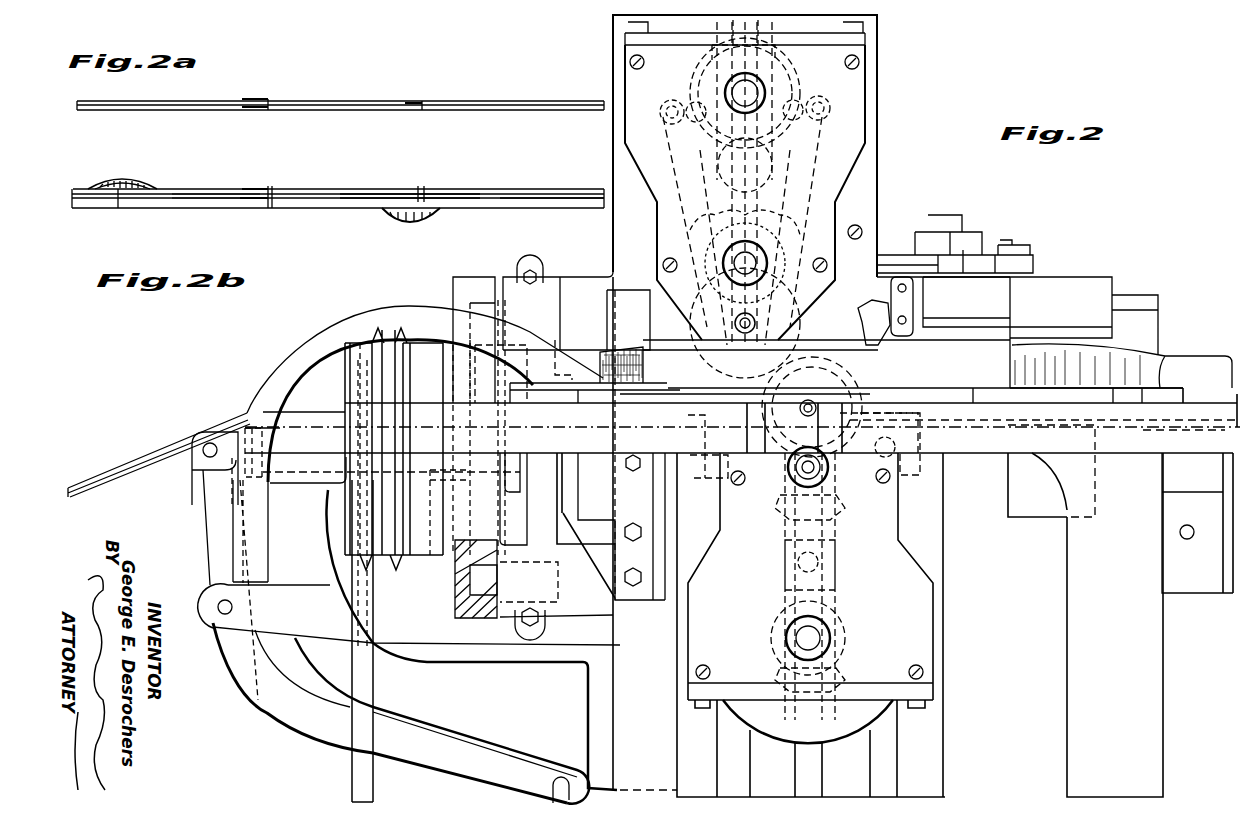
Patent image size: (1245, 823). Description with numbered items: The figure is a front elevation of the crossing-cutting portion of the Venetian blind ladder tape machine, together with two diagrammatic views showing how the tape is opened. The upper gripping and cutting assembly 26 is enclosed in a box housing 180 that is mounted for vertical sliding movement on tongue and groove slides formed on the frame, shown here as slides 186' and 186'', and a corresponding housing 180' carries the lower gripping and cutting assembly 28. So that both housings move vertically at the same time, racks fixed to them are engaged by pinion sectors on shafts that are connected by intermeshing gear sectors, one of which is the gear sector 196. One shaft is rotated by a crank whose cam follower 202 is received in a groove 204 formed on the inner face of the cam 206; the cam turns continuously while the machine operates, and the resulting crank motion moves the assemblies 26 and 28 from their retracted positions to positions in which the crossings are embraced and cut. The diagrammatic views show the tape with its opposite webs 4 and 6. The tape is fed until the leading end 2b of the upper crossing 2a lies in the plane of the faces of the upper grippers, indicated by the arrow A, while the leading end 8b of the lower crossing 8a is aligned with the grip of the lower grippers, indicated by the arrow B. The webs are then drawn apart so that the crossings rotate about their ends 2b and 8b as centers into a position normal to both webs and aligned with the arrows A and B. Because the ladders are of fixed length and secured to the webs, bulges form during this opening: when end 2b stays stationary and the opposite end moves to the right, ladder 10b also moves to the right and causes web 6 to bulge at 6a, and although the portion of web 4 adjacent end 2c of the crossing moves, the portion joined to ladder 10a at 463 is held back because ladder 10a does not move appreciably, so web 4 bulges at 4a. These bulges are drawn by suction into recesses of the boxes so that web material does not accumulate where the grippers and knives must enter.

In FIG. 2A, the upper crossing 2a is at (250, 99).
In FIG. 2B, the upper crossing 2a is at (260, 189).
In FIG. 2A, the leading end of crossing 2b is at (268, 108).
In FIG. 2B, the leading end of crossing 2b is at (274, 190).
In FIG. 2A, the end of crossing 2c is at (250, 107).
In FIG. 2B, the end of crossing 2c is at (268, 204).
In FIG. 2A, the web 4 is at (204, 110).
In FIG. 2B, the web 4 is at (328, 208).
In FIG. 2B, the bulge 4a is at (418, 222).
In FIG. 2A, the web 6 is at (190, 101).
In FIG. 2B, the web 6 is at (220, 189).
In FIG. 2B, the bulge 6a is at (136, 180).
In FIG. 2A, the lower crossing 8a is at (410, 102).
In FIG. 2A, the leading end of under crossing 8b is at (424, 106).
In FIG. 2B, the leading end of under crossing 8b is at (424, 190).
In FIG. 2B, the ladder 10a is at (366, 203).
In FIG. 2B, the ladder 10b is at (178, 196).
In FIG. 2B, the point of junction of web and ladder 463 is at (580, 204).
In FIG. 2A, the arrow A is at (269, 90).
In FIG. 2B, the arrow A is at (270, 178).
In FIG. 2A, the arrow B is at (424, 90).
In FIG. 2B, the arrow B is at (424, 178).
In FIG. 2, the upper gripping and cutting assembly 26 is at (855, 100).
In FIG. 2, the box housing 180 is at (801, 199).
In FIG. 2, the lower frame plate 180' is at (853, 538).
In FIG. 2, the lower gripping and cutting assembly 28 is at (946, 622).
In FIG. 2, the frame leg 186' is at (936, 748).
In FIG. 2, the frame leg 186'' is at (769, 748).
In FIG. 2, the gear sector 196 is at (530, 395).
In FIG. 2, the cam follower 202 is at (500, 498).
In FIG. 2, the groove 204 is at (470, 580).
In FIG. 2, the cam 206 is at (482, 280).